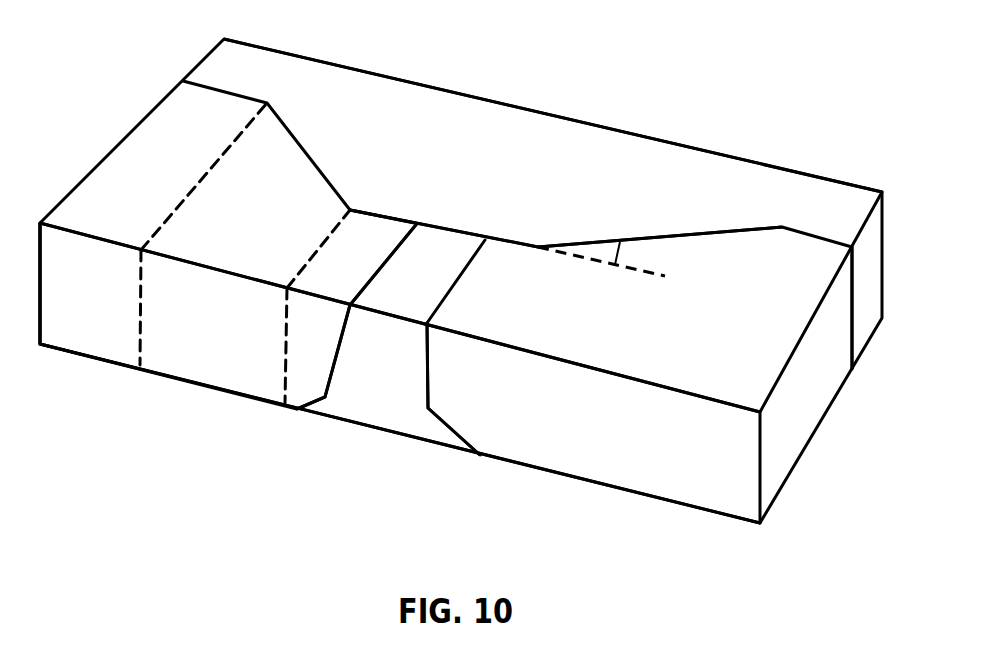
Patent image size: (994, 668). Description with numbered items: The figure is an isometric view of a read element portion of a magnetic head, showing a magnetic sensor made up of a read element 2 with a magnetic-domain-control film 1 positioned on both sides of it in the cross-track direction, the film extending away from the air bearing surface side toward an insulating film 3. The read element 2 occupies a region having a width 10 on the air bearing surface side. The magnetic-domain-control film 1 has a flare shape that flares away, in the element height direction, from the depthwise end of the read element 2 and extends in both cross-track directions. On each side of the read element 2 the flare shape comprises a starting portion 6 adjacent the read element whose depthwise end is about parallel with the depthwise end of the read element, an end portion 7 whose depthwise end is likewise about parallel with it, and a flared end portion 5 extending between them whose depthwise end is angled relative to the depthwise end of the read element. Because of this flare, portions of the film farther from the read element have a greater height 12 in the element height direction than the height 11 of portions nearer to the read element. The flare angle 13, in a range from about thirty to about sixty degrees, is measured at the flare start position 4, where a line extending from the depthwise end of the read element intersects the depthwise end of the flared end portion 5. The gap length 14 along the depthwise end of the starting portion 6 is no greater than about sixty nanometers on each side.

The magnetic-domain-control film 1 is at (233, 216).
The read element 2 is at (405, 423).
The insulating film 3 is at (585, 145).
The flare start position 4 is at (535, 240).
The flared end portion 5 is at (205, 350).
The starting portion 6 is at (310, 362).
The end portion 7 is at (83, 332).
The width 10 is at (340, 372).
The height 11 is at (377, 226).
The height 12 is at (887, 378).
The flare angle 13 is at (638, 248).
The gap length 14 is at (351, 204).